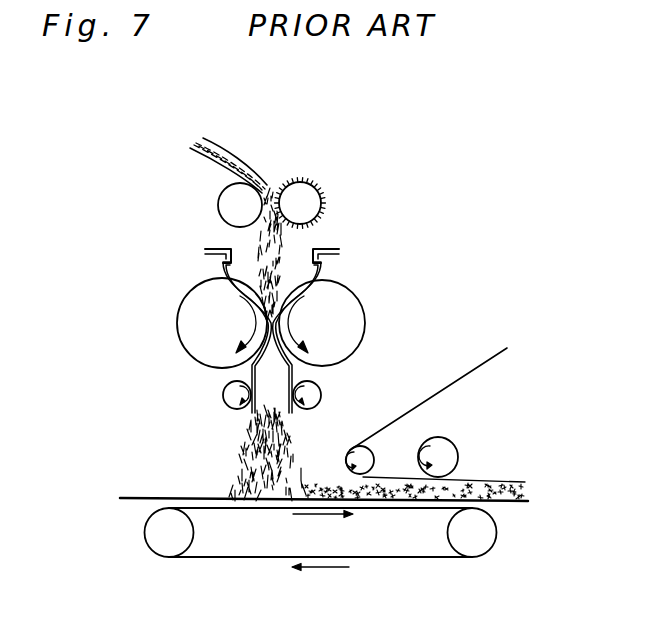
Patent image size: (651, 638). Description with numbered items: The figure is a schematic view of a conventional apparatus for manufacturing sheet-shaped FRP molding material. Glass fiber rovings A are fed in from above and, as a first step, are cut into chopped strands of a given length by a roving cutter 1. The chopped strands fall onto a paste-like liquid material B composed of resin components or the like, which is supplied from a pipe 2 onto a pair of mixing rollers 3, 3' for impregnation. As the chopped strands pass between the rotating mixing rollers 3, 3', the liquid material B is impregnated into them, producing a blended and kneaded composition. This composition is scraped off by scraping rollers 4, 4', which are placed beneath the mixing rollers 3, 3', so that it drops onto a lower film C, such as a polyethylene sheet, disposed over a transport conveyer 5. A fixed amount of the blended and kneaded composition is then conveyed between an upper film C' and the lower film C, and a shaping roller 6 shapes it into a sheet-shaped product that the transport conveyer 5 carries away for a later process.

The glass fiber rovings A is at (225, 162).
The roving cutter 1 is at (322, 190).
The pipe 2 is at (205, 252).
The paste-like liquid material B is at (225, 270).
The mixing roller 3' is at (176, 323).
The mixing roller 3 is at (367, 323).
The scraping roller 4' is at (168, 392).
The scraping roller 4 is at (367, 379).
The lower film C is at (308, 470).
The upper film C' is at (455, 411).
The shaping roller 6 is at (447, 455).
The transport conveyer 5 is at (258, 558).